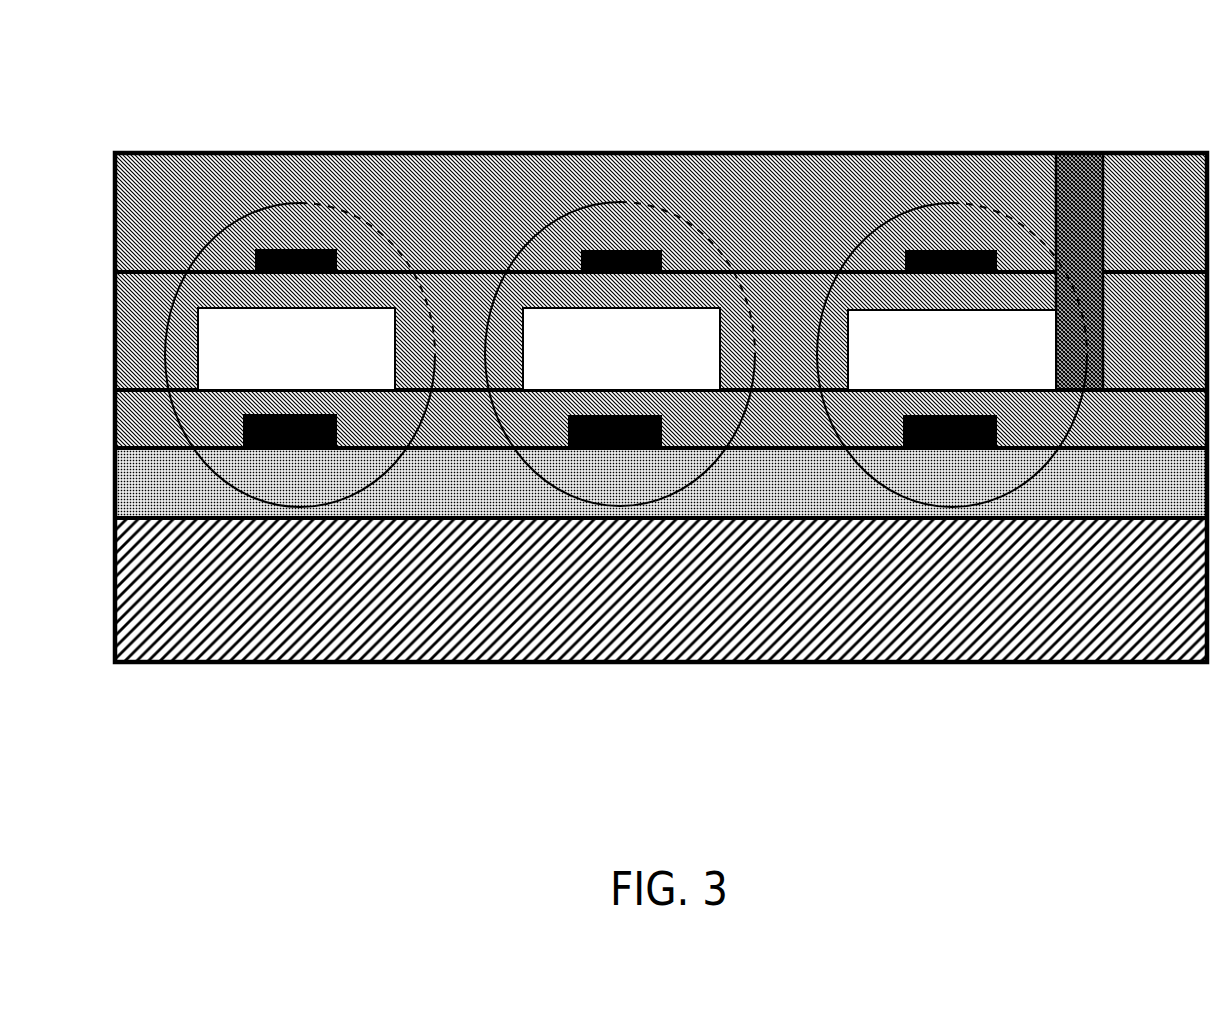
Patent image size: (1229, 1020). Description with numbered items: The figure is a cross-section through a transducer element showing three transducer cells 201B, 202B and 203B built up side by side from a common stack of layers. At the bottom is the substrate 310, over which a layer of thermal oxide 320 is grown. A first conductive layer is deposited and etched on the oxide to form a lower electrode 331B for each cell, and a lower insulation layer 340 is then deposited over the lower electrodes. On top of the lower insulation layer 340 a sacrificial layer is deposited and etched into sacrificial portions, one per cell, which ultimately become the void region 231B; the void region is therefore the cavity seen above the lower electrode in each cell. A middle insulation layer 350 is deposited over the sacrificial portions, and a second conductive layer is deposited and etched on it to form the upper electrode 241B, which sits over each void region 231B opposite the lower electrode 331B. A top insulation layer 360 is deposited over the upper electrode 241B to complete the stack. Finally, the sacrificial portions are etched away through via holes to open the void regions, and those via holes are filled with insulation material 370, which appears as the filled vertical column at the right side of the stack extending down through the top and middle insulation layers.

The transducer cell 201B is at (350, 213).
The transducer cell 202B is at (672, 213).
The transducer cell 203B is at (997, 215).
The void region 231B is at (296, 349).
The upper electrode 241B is at (228, 222).
The lower electrode 331B is at (320, 457).
The substrate 310 is at (195, 560).
The layer of thermal oxide 320 is at (487, 487).
The lower insulation layer 340 is at (775, 417).
The middle insulation layer 350 is at (1150, 345).
The top insulation layer 360 is at (778, 227).
The insulation material 370 is at (1075, 192).